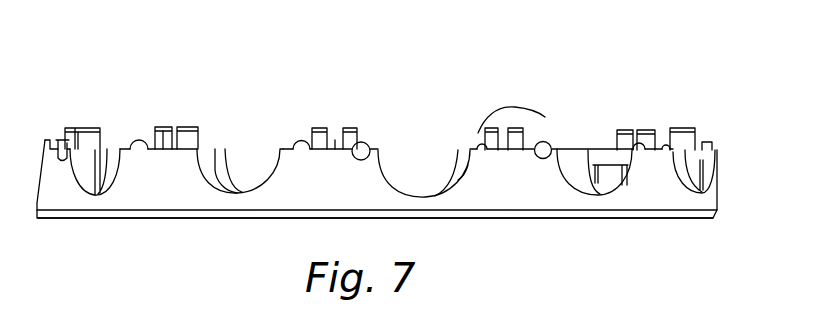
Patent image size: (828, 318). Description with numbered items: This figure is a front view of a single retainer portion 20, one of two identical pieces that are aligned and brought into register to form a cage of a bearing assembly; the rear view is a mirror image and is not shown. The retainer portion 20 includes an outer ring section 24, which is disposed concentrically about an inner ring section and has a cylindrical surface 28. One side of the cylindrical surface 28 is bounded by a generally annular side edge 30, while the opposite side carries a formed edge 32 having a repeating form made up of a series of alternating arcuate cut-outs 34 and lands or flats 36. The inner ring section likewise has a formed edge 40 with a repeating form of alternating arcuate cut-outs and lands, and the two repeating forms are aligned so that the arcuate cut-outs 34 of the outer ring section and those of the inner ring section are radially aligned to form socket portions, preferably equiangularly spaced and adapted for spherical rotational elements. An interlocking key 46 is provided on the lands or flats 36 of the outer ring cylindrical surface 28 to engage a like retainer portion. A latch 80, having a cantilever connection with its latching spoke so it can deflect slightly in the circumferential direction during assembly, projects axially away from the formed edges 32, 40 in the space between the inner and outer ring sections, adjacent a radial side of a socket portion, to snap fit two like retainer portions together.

The retainer portion 20 is at (397, 79).
The outer ring section 24 is at (503, 175).
The cylindrical surface 28 is at (345, 200).
The annular side edge 30 is at (583, 214).
The formed edge 32 is at (287, 143).
The arcuate cut-outs 34 is at (77, 172).
The lands or flats 36 is at (63, 157).
The formed edge 40 is at (352, 130).
The interlocking key 46 is at (513, 107).
The latch 80 is at (317, 130).